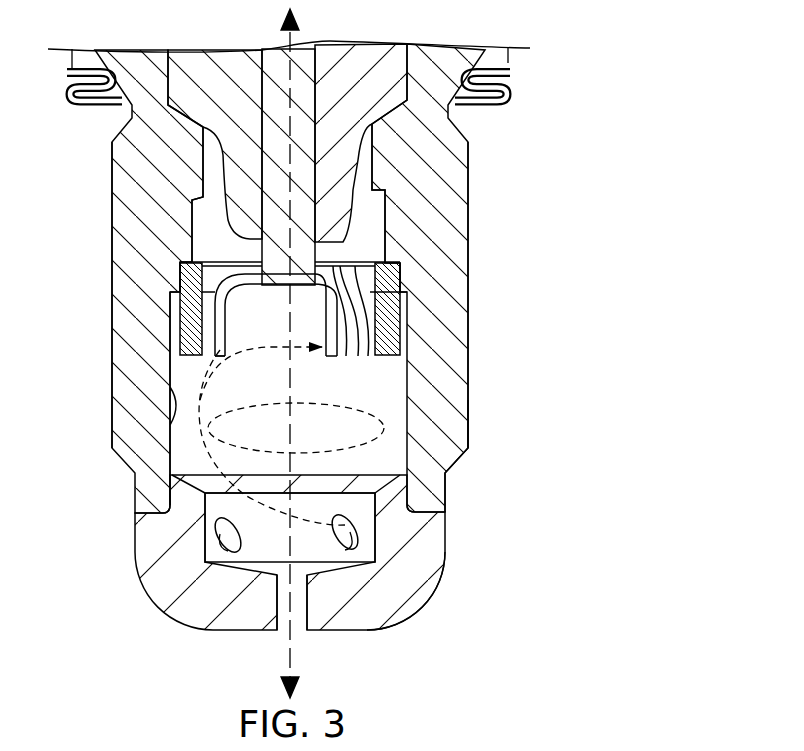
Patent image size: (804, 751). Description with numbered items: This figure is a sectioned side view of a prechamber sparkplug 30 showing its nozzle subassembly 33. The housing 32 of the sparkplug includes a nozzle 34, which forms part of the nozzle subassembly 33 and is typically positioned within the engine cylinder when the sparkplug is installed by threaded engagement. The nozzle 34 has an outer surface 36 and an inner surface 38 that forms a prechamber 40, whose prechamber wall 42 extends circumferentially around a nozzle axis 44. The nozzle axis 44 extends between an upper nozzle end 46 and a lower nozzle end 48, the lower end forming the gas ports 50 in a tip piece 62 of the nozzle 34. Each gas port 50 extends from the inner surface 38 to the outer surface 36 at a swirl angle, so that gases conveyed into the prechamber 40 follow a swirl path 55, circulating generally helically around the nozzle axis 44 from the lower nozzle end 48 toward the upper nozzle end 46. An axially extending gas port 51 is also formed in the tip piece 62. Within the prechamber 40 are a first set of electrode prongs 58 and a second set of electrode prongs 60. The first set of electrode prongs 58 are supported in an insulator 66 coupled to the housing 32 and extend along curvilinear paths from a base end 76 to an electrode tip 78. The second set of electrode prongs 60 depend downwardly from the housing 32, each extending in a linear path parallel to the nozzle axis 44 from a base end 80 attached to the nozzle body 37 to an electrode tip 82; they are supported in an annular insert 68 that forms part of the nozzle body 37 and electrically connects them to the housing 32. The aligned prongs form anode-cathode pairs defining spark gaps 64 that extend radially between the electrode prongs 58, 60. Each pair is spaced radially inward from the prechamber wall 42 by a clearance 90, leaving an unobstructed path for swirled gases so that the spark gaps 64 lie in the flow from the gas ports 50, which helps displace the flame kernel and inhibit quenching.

The prechamber sparkplug 30 is at (558, 216).
The housing 32 is at (462, 164).
The nozzle subassembly 33 is at (630, 102).
The nozzle 34 is at (467, 382).
The outer surface 36 is at (112, 430).
The nozzle body 37 is at (443, 432).
The inner surface 38 is at (197, 480).
The prechamber 40 is at (336, 445).
The prechamber wall 42 is at (172, 427).
The nozzle axis 44 is at (288, 673).
The upper nozzle end 46 is at (104, 227).
The lower nozzle end 48 is at (436, 615).
The gas port 50 is at (228, 551).
The axially extending gas port 51 is at (297, 632).
The swirl path 55 is at (270, 513).
The first set of electrode prongs 58 is at (322, 305).
The second set of electrode prongs 60 is at (190, 305).
The tip piece 62 is at (418, 587).
The spark gaps 64 is at (207, 364).
The insulator 66 is at (373, 53).
The insert 68 is at (386, 263).
The base end 76 is at (246, 273).
The electrode tip 78 is at (222, 360).
The base end 80 is at (193, 262).
The electrode tip 82 is at (192, 358).
The clearance 90 is at (400, 342).